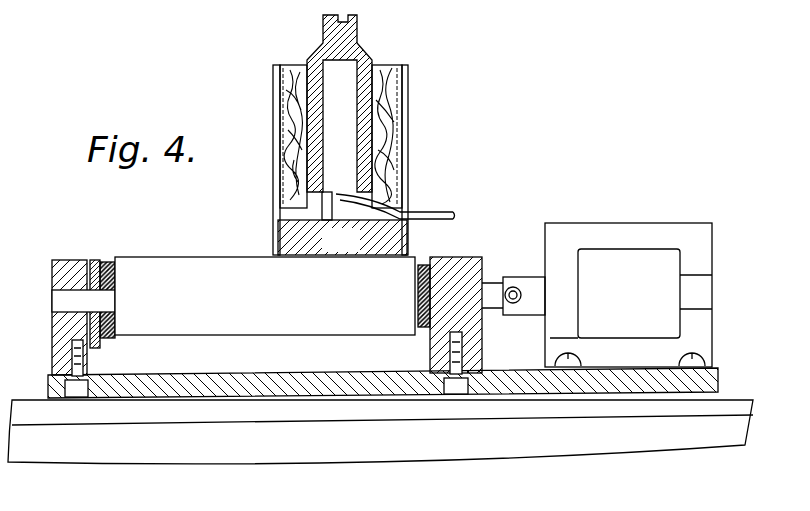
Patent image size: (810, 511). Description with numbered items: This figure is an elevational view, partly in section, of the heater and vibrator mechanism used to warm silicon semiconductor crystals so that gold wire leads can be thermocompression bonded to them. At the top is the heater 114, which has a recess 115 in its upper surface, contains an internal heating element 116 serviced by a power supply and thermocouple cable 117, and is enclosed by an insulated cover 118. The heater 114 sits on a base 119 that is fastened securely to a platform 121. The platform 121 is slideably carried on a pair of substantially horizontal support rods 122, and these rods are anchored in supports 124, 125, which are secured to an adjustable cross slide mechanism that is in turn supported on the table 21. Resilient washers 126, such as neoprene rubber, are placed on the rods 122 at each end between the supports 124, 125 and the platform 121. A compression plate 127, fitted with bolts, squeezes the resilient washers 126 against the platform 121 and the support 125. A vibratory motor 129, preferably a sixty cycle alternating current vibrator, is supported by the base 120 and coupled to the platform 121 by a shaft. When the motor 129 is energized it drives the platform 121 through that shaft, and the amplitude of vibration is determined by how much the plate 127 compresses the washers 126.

The table 21 is at (470, 448).
The heater 114 is at (346, 44).
The recess 115 is at (325, 29).
The internal heating element 116 is at (352, 150).
The power supply and thermocouple cable 117 is at (419, 212).
The insulated cover 118 is at (404, 110).
The base 119 is at (342, 237).
The base 120 is at (359, 372).
The platform 121 is at (330, 304).
The support rods 122 is at (54, 303).
The support 124 is at (64, 261).
The support 125 is at (486, 270).
The resilient washers 126 is at (108, 261).
The compression plate 127 is at (86, 288).
The vibratory motor 129 is at (681, 262).